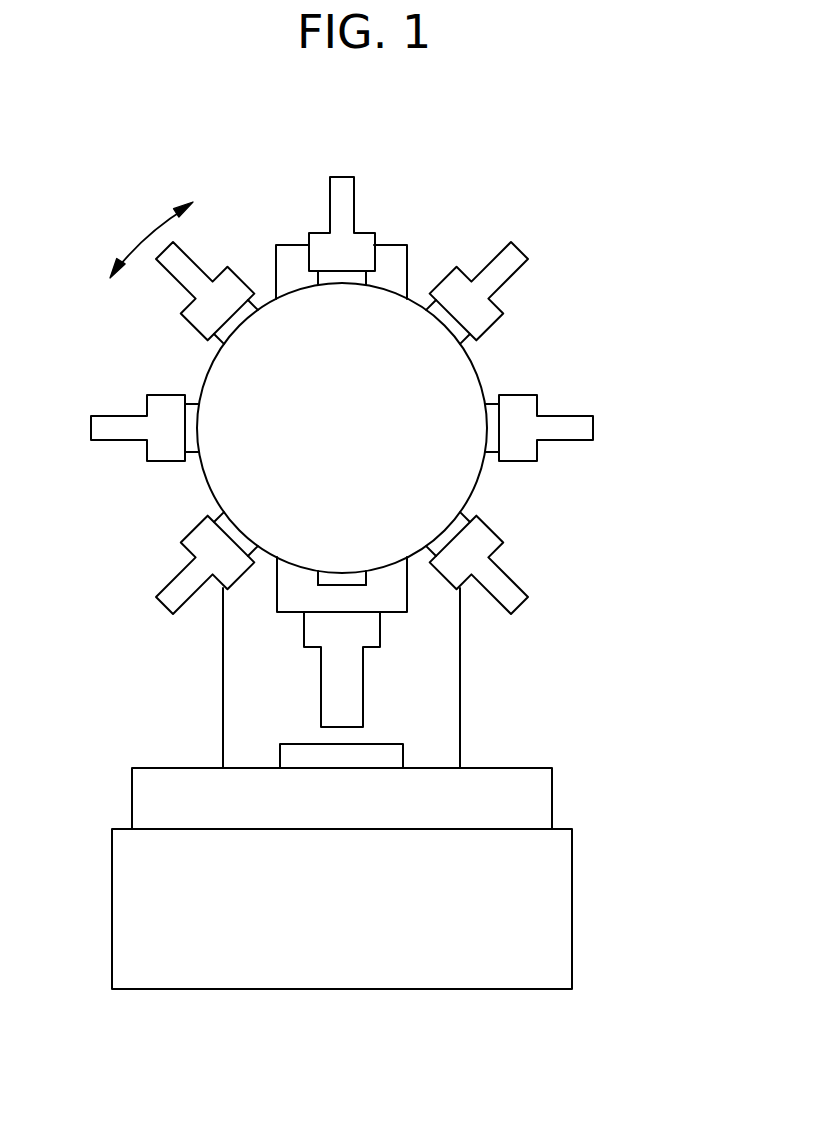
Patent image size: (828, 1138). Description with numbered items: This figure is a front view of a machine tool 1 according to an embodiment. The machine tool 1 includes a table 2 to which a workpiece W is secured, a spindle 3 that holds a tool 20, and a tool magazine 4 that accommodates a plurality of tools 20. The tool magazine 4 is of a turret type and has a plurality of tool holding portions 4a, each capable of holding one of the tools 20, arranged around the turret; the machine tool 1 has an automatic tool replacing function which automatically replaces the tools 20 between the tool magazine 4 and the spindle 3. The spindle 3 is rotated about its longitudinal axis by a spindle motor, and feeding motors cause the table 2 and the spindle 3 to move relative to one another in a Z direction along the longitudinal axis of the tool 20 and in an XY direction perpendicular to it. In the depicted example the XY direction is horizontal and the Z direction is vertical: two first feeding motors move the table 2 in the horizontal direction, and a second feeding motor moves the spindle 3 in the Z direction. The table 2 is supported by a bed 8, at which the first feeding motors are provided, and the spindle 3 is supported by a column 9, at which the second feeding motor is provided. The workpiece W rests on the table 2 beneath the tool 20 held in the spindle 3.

The machine tool 1 is at (447, 237).
The table 2 is at (552, 797).
The spindle 3 is at (407, 600).
The tool magazine 4 is at (528, 360).
The tool holding portion 4a is at (190, 462).
The bed 8 is at (572, 904).
The column 9 is at (223, 702).
The tool 20 is at (117, 416).
The workpiece W is at (388, 744).